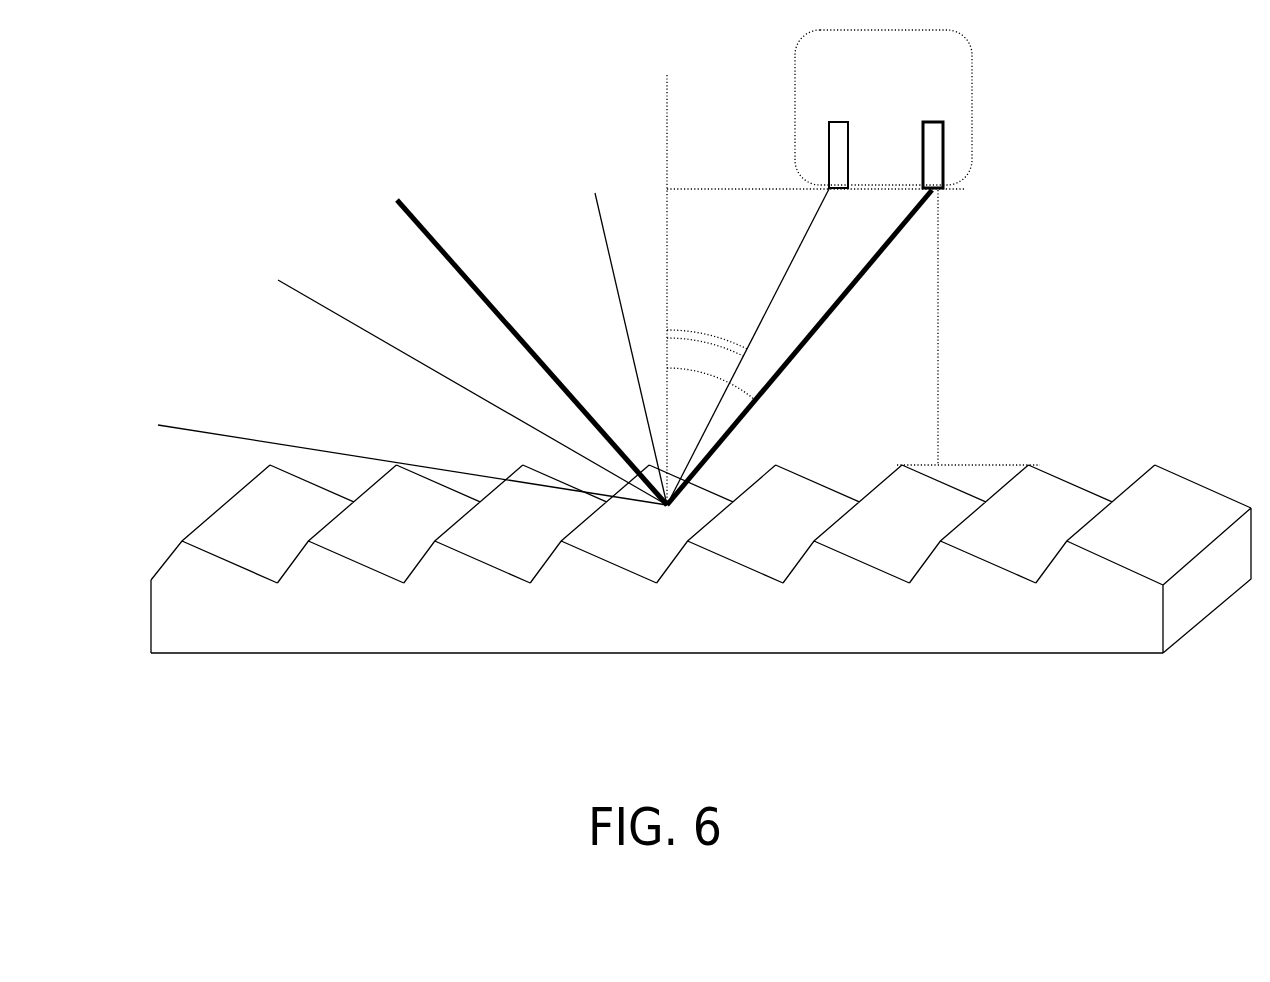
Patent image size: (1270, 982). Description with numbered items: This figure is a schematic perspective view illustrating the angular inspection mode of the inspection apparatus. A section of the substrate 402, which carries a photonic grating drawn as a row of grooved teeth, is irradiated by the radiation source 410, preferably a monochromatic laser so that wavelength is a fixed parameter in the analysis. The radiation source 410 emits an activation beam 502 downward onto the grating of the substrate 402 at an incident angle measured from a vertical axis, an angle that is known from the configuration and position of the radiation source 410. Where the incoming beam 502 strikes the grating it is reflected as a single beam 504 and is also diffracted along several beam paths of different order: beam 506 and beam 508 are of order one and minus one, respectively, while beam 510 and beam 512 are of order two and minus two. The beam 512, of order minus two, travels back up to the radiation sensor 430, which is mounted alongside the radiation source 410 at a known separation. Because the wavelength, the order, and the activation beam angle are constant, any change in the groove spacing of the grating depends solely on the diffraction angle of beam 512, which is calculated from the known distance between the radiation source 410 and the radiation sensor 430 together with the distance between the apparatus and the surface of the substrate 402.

The substrate 402 is at (1188, 478).
The radiation source 410 is at (932, 121).
The radiation sensor 430 is at (841, 121).
The activation beam 502 is at (822, 322).
The single beam 504 is at (431, 232).
The beam of order 1 506 is at (342, 318).
The beam of order −1 508 is at (613, 273).
The beam of order 2 510 is at (277, 445).
The beam of order −2 512 is at (772, 291).